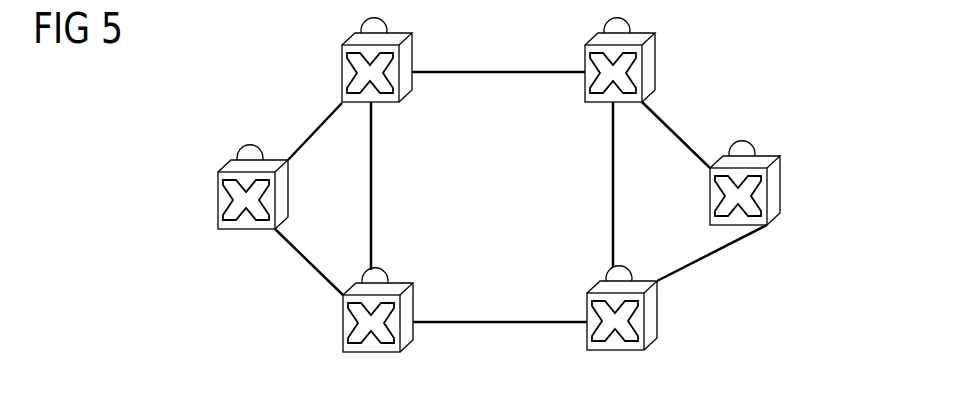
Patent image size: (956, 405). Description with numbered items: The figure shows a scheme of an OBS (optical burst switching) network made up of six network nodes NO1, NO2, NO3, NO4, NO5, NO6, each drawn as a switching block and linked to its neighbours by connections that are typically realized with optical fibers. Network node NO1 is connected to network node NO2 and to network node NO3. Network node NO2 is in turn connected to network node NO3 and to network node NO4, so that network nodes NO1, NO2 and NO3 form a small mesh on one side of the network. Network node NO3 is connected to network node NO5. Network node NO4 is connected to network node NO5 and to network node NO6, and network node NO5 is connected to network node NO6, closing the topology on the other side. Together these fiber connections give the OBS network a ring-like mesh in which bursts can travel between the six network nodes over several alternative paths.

The network node NO1 is at (281, 187).
The network node NO2 is at (402, 60).
The network node NO3 is at (405, 310).
The network node NO4 is at (648, 60).
The network node NO5 is at (649, 308).
The network node NO6 is at (773, 183).